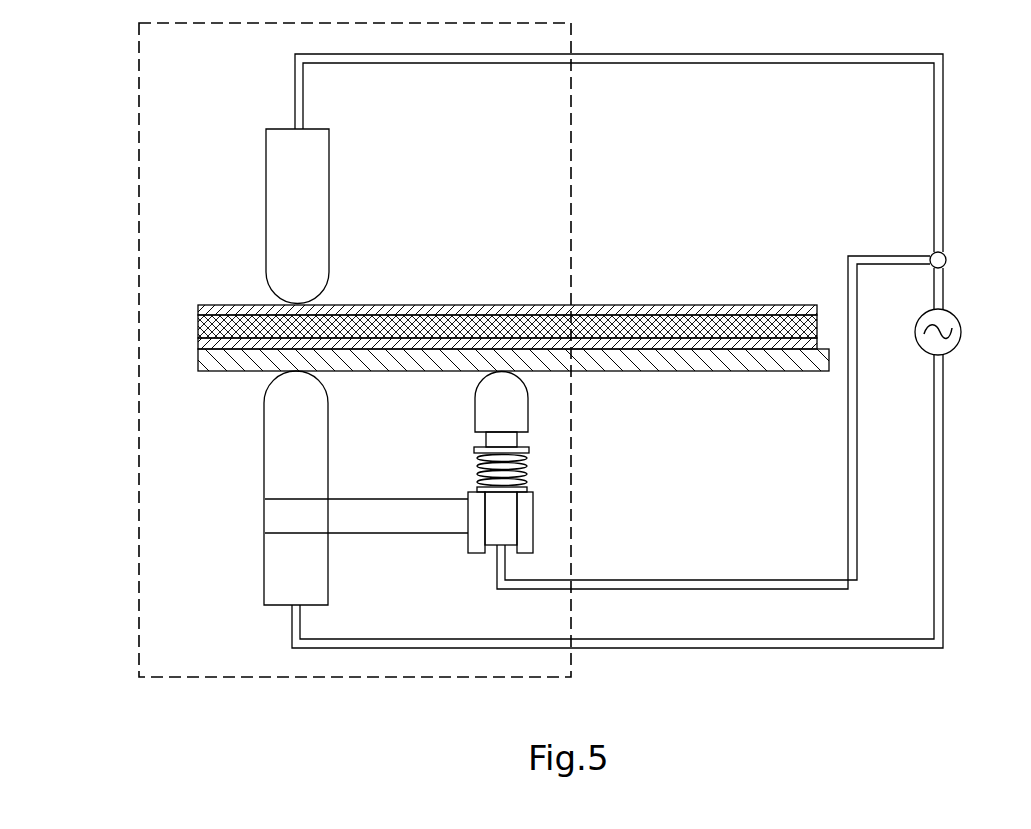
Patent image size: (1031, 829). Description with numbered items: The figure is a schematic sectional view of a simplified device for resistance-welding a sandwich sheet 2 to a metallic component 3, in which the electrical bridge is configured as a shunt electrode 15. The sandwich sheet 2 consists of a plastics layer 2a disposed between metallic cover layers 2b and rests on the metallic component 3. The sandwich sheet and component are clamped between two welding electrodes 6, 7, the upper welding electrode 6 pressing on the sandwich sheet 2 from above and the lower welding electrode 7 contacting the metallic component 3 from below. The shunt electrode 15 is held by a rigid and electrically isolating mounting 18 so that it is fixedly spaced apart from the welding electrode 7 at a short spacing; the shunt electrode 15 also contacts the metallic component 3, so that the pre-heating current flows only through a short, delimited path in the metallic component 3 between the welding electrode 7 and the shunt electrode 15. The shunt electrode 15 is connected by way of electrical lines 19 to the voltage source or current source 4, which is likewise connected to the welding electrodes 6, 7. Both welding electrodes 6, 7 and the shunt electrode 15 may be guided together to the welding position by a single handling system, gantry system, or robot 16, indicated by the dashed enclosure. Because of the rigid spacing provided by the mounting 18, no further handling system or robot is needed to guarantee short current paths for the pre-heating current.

The sandwich sheet 2 is at (507, 321).
The plastics layer 2a is at (777, 325).
The metallic cover layer 2b is at (725, 309).
The metallic component 3 is at (661, 363).
The voltage source or current source 4 is at (961, 323).
The welding electrode 6 is at (281, 209).
The welding electrode 7 is at (277, 460).
The shunt electrode 15 is at (508, 440).
The robot 16 is at (139, 560).
The rigid and electrically isolating mounting 18 is at (407, 521).
The electrical lines 19 is at (847, 510).